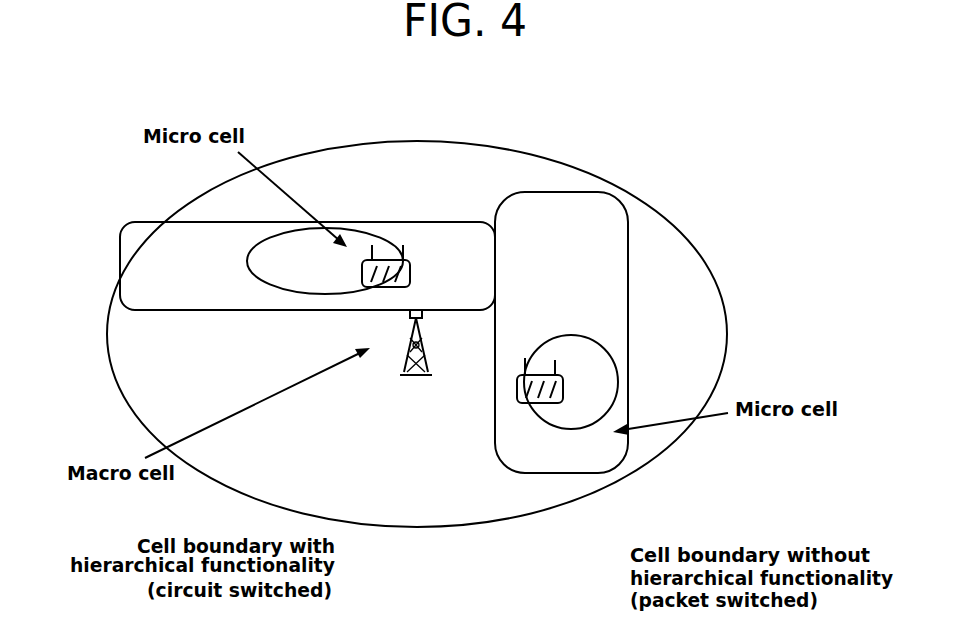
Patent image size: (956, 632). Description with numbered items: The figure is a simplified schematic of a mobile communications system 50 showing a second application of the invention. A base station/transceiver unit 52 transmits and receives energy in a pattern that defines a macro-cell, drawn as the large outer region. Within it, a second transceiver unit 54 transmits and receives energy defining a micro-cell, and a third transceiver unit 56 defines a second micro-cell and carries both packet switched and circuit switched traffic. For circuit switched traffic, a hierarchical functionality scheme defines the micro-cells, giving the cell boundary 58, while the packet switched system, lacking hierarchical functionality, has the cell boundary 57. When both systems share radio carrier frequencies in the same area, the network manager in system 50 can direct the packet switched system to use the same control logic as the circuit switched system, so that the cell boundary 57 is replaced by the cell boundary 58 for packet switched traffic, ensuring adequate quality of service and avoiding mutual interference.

The mobile communications system 50 is at (688, 169).
The base station/transceiver unit 52 is at (417, 376).
The second transceiver unit 54 is at (410, 262).
The third transceiver unit 56 is at (563, 388).
The cell boundary 57 is at (576, 440).
The cell boundary 58 is at (486, 423).